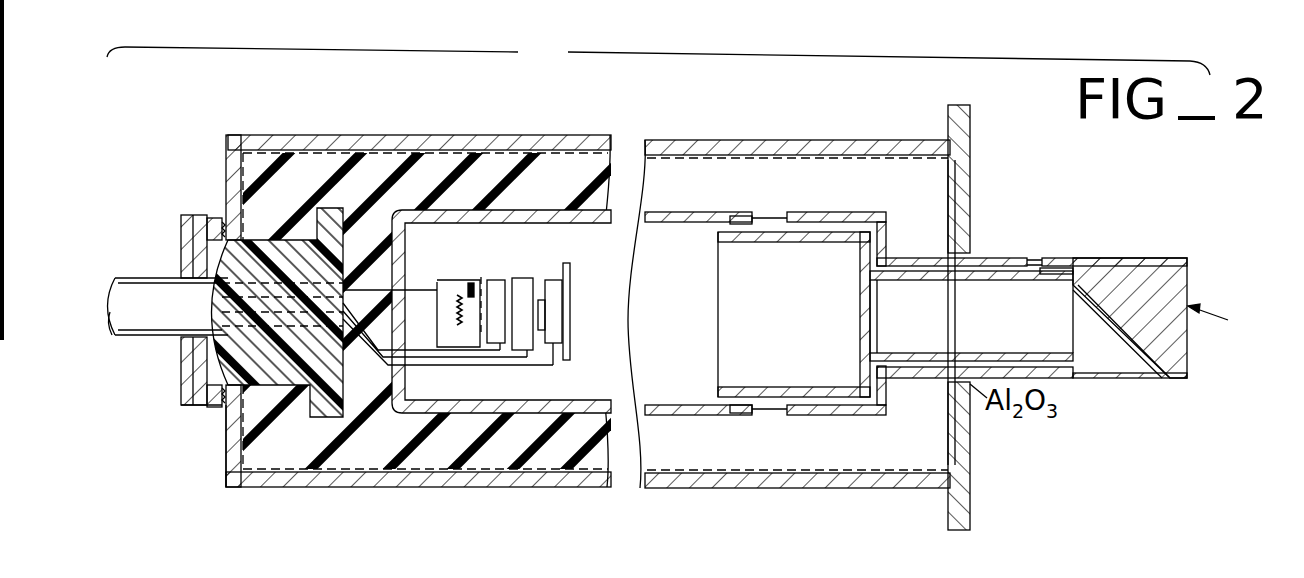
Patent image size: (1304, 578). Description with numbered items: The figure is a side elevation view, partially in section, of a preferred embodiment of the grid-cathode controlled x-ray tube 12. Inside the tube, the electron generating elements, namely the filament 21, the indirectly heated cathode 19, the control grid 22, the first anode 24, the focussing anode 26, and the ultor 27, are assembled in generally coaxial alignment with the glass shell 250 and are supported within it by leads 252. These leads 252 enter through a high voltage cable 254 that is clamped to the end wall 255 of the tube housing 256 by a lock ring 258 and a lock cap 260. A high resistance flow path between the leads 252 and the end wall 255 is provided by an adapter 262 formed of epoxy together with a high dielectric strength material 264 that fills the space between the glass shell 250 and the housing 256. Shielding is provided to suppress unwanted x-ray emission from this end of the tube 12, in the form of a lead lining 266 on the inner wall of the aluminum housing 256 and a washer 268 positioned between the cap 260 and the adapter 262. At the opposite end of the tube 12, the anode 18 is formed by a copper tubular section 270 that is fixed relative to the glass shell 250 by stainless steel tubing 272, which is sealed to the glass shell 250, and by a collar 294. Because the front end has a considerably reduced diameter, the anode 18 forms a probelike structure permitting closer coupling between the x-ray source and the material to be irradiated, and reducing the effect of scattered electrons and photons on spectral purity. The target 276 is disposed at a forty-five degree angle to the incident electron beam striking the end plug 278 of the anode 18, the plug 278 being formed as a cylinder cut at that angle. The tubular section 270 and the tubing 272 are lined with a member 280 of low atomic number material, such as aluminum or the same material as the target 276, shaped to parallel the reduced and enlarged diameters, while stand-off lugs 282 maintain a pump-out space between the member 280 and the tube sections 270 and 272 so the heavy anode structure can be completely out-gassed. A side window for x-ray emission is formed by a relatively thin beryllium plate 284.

The x-ray tube 12 is at (658, 57).
The anode 18 is at (1228, 324).
The indirectly heated cathode 19 is at (470, 293).
The filament 21 is at (452, 300).
The control grid 22 is at (483, 280).
The first anode 24 is at (495, 333).
The focussing anode 26 is at (525, 343).
The ultor 27 is at (553, 337).
The glass shell 250 is at (427, 410).
The leads 252 is at (384, 355).
The high voltage cable 254 is at (137, 283).
The end wall 255 is at (222, 473).
The tube housing 256 is at (267, 487).
The lock ring 258 is at (218, 402).
The lock cap 260 is at (181, 410).
The adapter 262 is at (235, 355).
The high dielectric strength material 264 is at (310, 178).
The lead lining 266 is at (477, 477).
The washer 268 is at (200, 255).
The tubular section 270 is at (1125, 258).
The stainless steel tubing 272 is at (852, 417).
The target 276 is at (1004, 321).
The end plug 278 is at (1187, 345).
The member 280 is at (777, 405).
The stand-off lugs 282 is at (855, 213).
The beryllium plate 284 is at (1140, 380).
The collar 294 is at (887, 400).